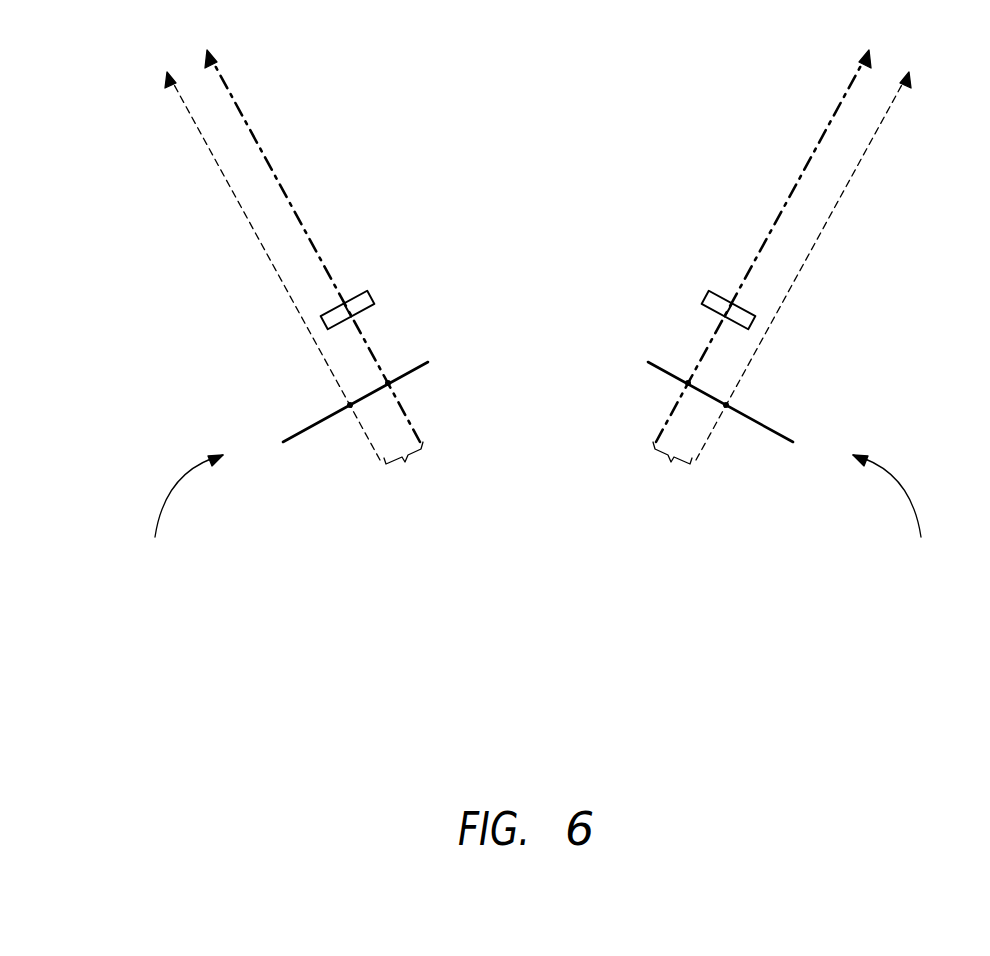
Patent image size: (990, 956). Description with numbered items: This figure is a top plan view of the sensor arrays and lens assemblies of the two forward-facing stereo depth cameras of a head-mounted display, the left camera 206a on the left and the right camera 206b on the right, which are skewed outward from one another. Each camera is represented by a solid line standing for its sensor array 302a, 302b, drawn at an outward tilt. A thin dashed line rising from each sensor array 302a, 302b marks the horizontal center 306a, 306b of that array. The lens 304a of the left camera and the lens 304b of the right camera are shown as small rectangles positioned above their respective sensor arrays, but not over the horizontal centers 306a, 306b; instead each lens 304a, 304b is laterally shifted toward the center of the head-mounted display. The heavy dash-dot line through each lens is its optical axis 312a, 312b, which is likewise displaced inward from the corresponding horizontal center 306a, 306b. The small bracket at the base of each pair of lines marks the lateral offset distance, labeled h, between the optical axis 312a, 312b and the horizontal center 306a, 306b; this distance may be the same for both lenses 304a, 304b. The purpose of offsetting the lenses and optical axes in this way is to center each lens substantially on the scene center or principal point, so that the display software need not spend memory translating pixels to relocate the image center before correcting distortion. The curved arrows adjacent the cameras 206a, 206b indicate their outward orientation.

The left camera 206a is at (176, 514).
The right camera 206b is at (904, 514).
The sensor array 302a is at (305, 431).
The sensor array 302b is at (771, 431).
The left camera lens 304a is at (373, 296).
The right camera lens 304b is at (703, 296).
The horizontal center 306a is at (214, 159).
The horizontal center 306b is at (862, 159).
The optical axis 312a is at (233, 100).
The optical axis 312b is at (843, 100).